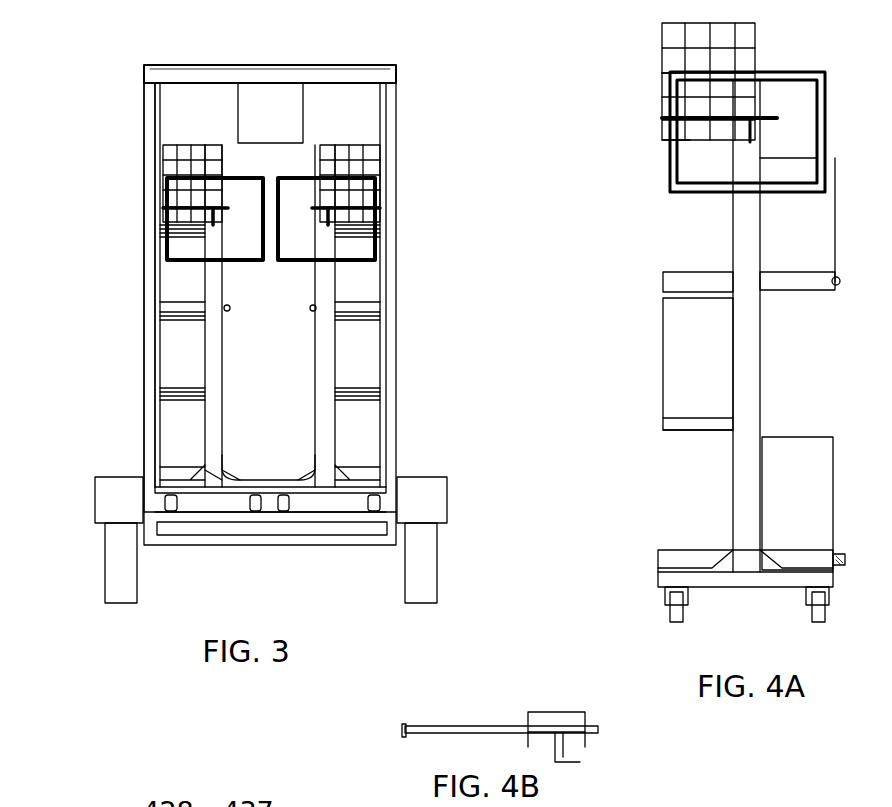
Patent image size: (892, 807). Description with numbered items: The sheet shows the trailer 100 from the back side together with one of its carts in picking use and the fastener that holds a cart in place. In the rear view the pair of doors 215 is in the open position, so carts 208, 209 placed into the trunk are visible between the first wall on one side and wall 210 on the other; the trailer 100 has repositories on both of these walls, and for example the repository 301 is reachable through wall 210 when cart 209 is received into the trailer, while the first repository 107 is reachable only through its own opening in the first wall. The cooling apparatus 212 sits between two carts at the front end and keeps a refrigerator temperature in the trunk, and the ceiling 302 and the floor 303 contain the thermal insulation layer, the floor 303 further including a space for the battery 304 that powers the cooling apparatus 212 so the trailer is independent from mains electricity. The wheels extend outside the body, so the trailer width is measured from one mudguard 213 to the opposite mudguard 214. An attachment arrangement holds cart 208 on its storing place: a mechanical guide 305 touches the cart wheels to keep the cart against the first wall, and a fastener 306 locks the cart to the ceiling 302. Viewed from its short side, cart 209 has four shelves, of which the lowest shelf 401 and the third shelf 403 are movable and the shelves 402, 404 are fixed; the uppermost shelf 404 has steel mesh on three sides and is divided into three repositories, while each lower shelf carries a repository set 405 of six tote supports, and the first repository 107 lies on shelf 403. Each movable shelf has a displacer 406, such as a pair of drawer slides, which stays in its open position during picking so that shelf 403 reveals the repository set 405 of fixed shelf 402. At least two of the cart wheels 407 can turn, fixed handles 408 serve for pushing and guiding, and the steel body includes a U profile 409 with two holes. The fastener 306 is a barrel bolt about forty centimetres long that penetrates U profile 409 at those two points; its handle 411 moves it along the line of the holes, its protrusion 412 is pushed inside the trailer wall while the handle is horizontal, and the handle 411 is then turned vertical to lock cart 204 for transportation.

In FIG. 3, the trailer 100 is at (190, 63).
In FIG. 3, the cooling apparatus 212 is at (276, 87).
In FIG. 3, the ceiling 302 is at (360, 80).
In FIG. 3, the cart 208 is at (146, 148).
In FIG. 3, the cart 209 is at (376, 154).
In FIG. 3, the wall 210 is at (400, 355).
In FIG. 3, the fastener 306 is at (164, 205).
In FIG. 4A, the fastener 306 is at (670, 118).
In FIG. 4B, the fastener 306 is at (463, 723).
In FIG. 3, the pair of doors 215 is at (144, 285).
In FIG. 3, the first repository 107 is at (144, 365).
In FIG. 4A, the first repository 107 is at (803, 281).
In FIG. 3, the repository 301 is at (383, 406).
In FIG. 3, the mechanical guide 305 is at (186, 534).
In FIG. 3, the battery 304 is at (274, 530).
In FIG. 3, the floor 303 is at (360, 530).
In FIG. 3, the mudguard 214 is at (105, 492).
In FIG. 3, the mudguard 213 is at (430, 503).
In FIG. 4A, the fixed handles 408 is at (804, 72).
In FIG. 4A, the cart 204 is at (668, 184).
In FIG. 4A, the shelf 404 is at (666, 142).
In FIG. 4A, the U profile 409 is at (762, 420).
In FIG. 4B, the U profile 409 is at (555, 710).
In FIG. 4A, the shelf 403 is at (662, 280).
In FIG. 4A, the repository set 405 is at (694, 382).
In FIG. 4A, the shelf 402 is at (662, 425).
In FIG. 4A, the shelf 401 is at (658, 555).
In FIG. 4A, the displacer 406 is at (800, 554).
In FIG. 4A, the cart wheels 407 is at (686, 612).
In FIG. 4B, the protrusion 412 is at (403, 738).
In FIG. 4B, the handle 411 is at (585, 760).